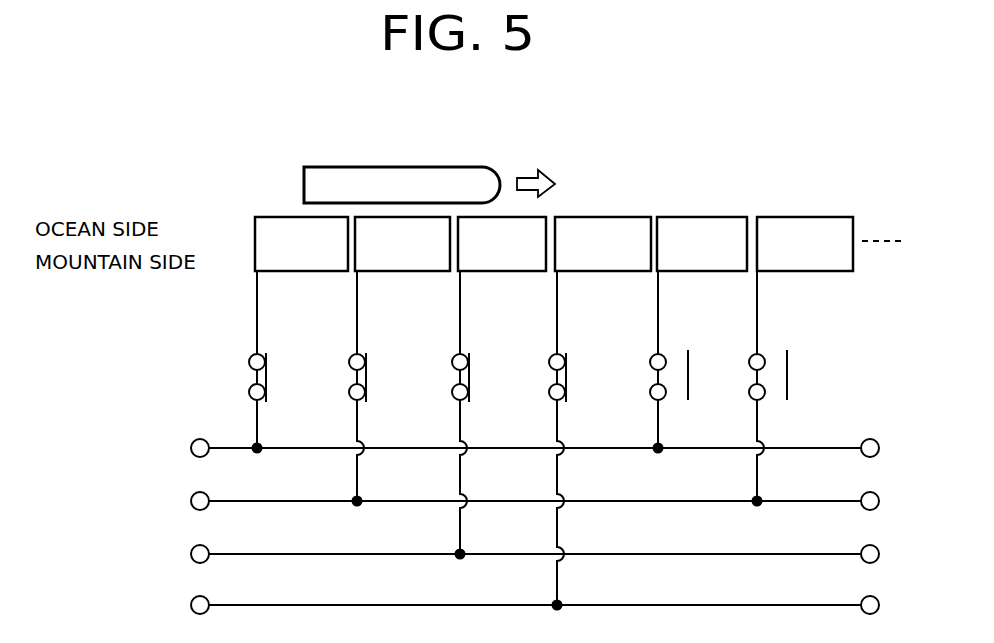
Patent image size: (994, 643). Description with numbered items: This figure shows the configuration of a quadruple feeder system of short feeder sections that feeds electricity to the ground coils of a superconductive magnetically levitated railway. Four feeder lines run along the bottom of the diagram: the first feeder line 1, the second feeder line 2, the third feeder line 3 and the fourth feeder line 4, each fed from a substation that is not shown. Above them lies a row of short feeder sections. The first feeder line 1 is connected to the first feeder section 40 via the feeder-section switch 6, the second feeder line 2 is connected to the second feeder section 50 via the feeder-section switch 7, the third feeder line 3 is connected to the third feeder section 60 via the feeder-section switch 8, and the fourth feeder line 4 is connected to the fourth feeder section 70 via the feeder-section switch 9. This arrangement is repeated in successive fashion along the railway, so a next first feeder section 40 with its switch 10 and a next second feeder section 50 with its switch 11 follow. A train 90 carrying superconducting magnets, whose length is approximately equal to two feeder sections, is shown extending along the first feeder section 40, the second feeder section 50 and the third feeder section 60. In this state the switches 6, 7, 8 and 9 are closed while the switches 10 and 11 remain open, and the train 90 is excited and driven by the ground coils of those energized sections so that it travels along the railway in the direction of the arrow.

The train 90 is at (412, 167).
The first feeder section 40 is at (311, 272).
The second feeder section 50 is at (421, 272).
The third feeder section 60 is at (520, 272).
The fourth feeder section 70 is at (622, 272).
The feeder-section switch 6 is at (271, 397).
The feeder-section switch 7 is at (371, 397).
The feeder-section switch 8 is at (474, 397).
The feeder-section switch 9 is at (571, 397).
The switch 10 is at (676, 393).
The switch 11 is at (775, 393).
The first feeder line 1 is at (519, 448).
The second feeder line 2 is at (519, 501).
The third feeder line 3 is at (519, 554).
The fourth feeder line 4 is at (519, 605).